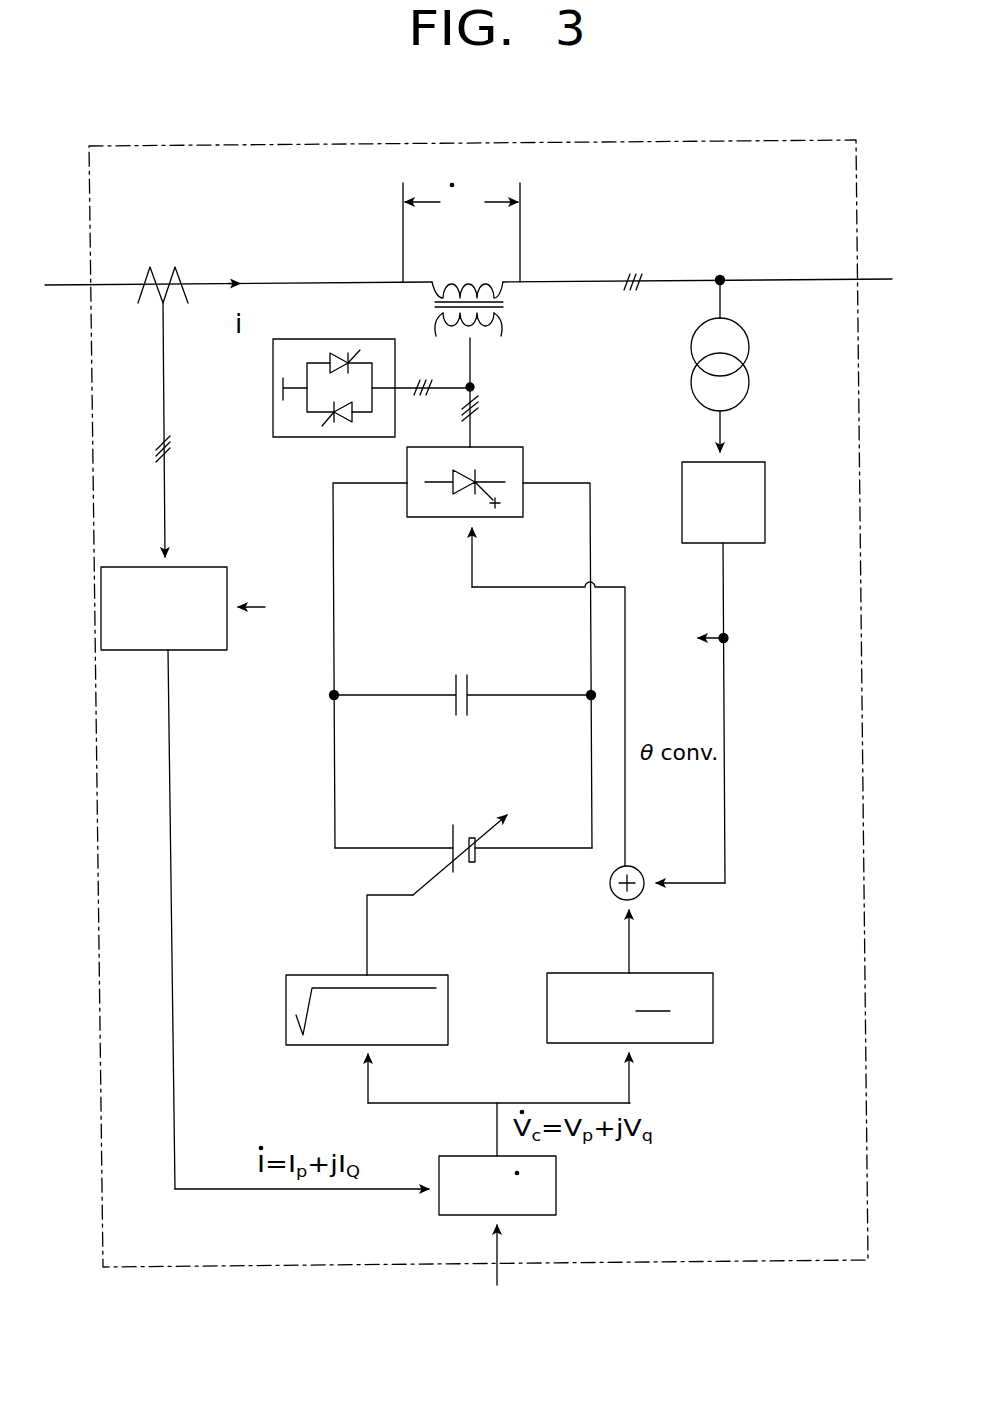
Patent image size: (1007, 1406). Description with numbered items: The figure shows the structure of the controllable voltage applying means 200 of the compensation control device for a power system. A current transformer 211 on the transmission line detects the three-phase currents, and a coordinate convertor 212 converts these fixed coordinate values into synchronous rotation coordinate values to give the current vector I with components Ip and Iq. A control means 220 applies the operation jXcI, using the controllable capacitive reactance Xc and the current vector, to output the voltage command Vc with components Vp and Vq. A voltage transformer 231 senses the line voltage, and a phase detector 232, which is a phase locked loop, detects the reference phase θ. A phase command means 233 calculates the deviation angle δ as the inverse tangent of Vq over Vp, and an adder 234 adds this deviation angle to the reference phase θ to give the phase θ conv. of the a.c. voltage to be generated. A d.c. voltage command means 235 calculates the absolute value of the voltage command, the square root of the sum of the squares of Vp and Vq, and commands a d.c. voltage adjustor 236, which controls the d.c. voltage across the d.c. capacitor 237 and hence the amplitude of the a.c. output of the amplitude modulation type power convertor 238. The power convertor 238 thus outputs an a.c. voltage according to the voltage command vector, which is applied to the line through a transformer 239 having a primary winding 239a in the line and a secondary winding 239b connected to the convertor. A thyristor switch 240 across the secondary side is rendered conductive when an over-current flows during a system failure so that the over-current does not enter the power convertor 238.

The controllable voltage applying means 200 is at (713, 142).
The current transformer 211 is at (176, 270).
The coordinate convertor 212 is at (190, 566).
The control means 220 is at (557, 1187).
The voltage transformer 231 is at (750, 352).
The phase detector 232 is at (766, 504).
The phase command means 233 is at (676, 973).
The adder 234 is at (638, 868).
The d.c. voltage command means 235 is at (411, 975).
The d.c. voltage adjustor 236 is at (474, 826).
The d.c. capacitor 237 is at (470, 690).
The amplitude modulation (PAM) type power convertor 238 is at (500, 448).
The transformer 239 is at (486, 315).
The primary winding 239a is at (468, 272).
The secondary winding 239b is at (487, 328).
The thyristor switch 240 is at (318, 339).